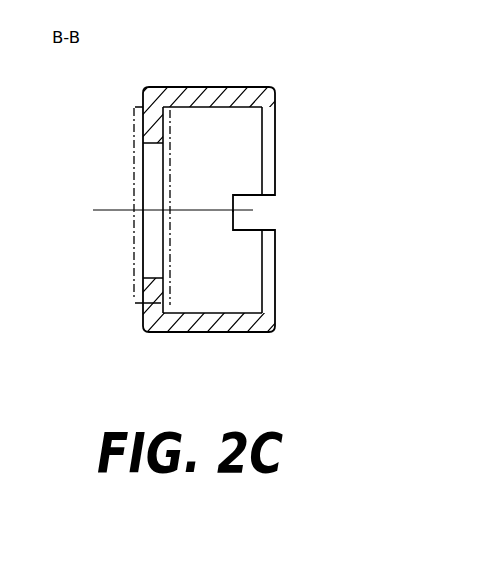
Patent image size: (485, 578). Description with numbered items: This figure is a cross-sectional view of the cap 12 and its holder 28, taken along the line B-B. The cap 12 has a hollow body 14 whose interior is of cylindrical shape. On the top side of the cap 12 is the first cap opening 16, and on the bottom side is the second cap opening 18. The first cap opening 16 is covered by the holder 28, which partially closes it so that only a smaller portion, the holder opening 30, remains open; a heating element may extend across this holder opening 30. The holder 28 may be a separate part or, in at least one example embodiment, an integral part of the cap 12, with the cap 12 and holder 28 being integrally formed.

The cap 12 is at (218, 330).
The hollow body 14 is at (242, 162).
The first cap opening 16 is at (135, 150).
The second cap opening 18 is at (267, 267).
The holder 28 is at (143, 87).
The holder opening 30 is at (155, 262).